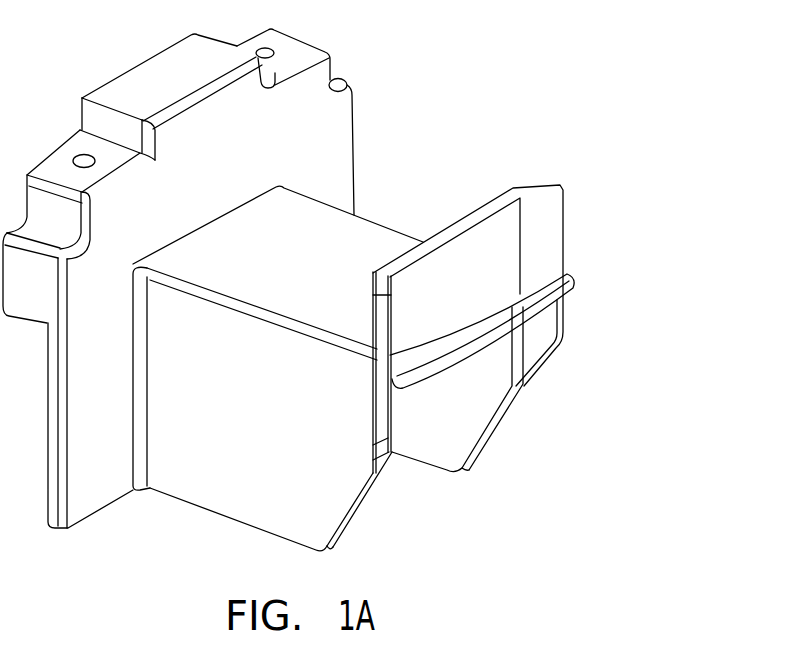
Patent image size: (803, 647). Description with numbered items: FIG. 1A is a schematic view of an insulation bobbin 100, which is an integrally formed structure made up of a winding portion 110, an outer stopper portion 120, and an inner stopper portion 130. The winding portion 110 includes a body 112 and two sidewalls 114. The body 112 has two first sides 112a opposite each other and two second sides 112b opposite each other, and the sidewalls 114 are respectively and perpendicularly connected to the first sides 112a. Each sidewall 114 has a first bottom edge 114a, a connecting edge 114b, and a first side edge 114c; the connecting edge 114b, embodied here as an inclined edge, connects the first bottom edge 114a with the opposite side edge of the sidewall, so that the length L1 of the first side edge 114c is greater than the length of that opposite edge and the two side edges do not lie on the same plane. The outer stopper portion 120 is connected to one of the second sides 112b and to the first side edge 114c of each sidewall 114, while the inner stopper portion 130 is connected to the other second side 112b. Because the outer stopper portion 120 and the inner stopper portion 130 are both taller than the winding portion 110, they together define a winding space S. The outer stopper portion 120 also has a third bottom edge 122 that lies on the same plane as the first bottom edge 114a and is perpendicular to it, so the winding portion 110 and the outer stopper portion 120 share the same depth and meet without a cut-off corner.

The insulation bobbin 100 is at (512, 562).
The winding portion 110 is at (668, 262).
The body 112 is at (372, 272).
The first side 112a is at (377, 220).
The second side 112b is at (216, 222).
The sidewall 114 is at (470, 390).
The first bottom edge 114a is at (213, 513).
The connecting edge 114b is at (348, 517).
The first side edge 114c is at (139, 413).
The outer stopper portion 120 is at (317, 78).
The third bottom edge 122 is at (103, 510).
The inner stopper portion 130 is at (480, 235).
The winding space S is at (377, 145).
The length of the first side edge L1 is at (127, 268).